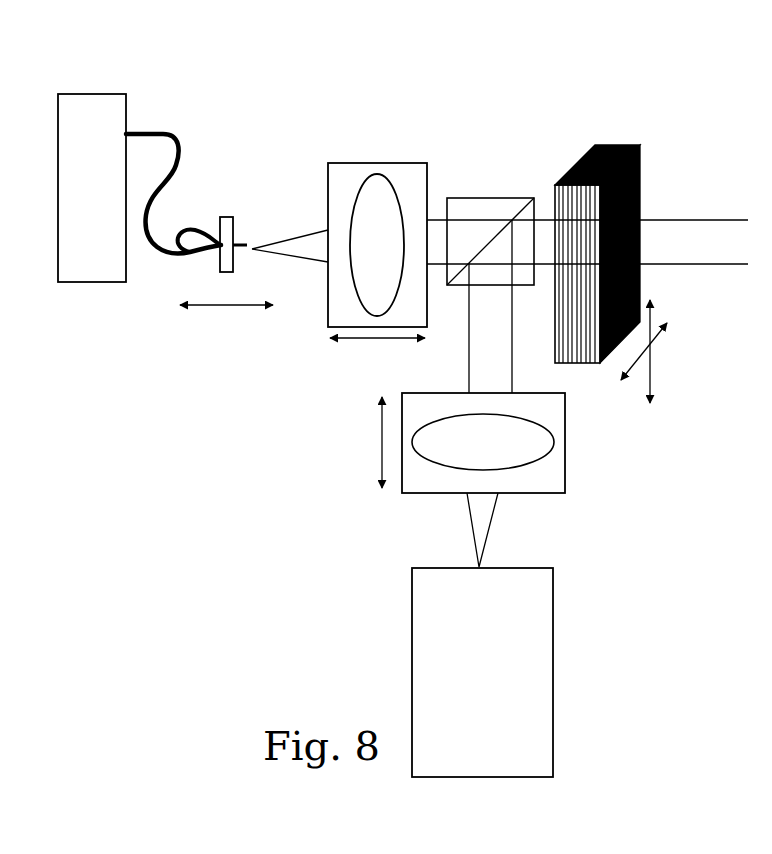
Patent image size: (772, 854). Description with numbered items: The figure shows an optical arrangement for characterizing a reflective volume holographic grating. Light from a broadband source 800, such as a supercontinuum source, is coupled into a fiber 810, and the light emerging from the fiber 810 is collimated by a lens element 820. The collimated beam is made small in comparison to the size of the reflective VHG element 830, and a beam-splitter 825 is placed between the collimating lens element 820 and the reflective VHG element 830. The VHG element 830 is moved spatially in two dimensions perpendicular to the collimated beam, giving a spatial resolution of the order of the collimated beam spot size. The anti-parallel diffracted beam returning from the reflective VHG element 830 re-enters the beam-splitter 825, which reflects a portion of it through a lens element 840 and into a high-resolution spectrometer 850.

The broadband source 800 is at (93, 94).
The fiber 810 is at (168, 133).
The lens element 820 is at (360, 170).
The beam-splitter 825 is at (490, 193).
The reflective VHG element 830 is at (598, 145).
The lens element 840 is at (560, 432).
The high-resolution spectrometer 850 is at (543, 612).